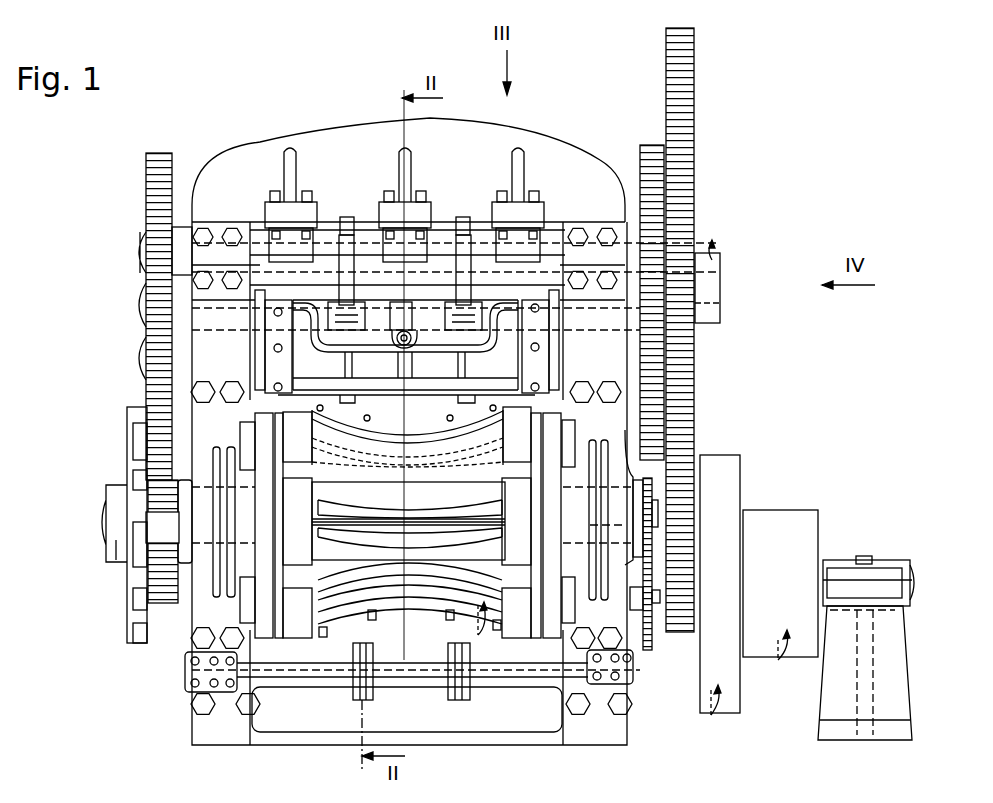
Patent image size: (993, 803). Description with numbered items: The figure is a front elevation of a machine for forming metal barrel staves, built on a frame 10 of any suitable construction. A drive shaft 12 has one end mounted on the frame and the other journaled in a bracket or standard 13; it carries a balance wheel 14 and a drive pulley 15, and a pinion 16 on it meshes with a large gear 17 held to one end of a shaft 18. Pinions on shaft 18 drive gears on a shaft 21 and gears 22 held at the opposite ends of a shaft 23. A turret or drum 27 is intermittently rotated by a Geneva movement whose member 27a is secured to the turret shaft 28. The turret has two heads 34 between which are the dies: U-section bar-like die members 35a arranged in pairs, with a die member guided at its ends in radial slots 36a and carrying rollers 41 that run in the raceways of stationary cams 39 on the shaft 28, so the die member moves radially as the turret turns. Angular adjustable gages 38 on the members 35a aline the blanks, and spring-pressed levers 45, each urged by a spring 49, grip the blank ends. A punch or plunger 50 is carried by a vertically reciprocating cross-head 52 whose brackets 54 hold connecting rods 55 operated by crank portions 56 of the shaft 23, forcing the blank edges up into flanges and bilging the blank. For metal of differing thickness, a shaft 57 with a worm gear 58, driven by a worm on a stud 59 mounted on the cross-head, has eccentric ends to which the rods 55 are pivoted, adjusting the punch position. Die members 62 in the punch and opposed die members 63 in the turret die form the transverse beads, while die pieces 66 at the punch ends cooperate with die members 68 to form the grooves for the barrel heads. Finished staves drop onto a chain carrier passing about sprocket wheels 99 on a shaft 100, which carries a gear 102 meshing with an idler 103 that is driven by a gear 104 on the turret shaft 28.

The frame 10 is at (256, 160).
The drive shaft 12 is at (913, 578).
The bracket or standard 13 is at (894, 664).
The balance wheel 14 is at (720, 462).
The drive pulley 15 is at (777, 518).
The pinion 16 is at (688, 640).
The large gear 17 is at (695, 99).
The shaft 18 is at (728, 290).
The shaft 21 is at (137, 298).
The gears 22 is at (147, 180).
The shaft 23 is at (137, 258).
The turret or drum 27 is at (410, 613).
The Geneva movement member 27a is at (133, 607).
The turret shaft 28 is at (103, 522).
The turret heads 34 is at (522, 617).
The die members 35a is at (428, 483).
The radial slots 36a is at (510, 573).
The angular adjustable gages 38 is at (476, 403).
The stationary cams 39 is at (268, 598).
The rollers 41 is at (250, 405).
The levers 45 is at (312, 460).
The spring 49 is at (350, 460).
The punch or plunger 50 is at (417, 400).
The cross-head 52 is at (318, 358).
The brackets 54 is at (358, 346).
The connecting rods 55 is at (350, 308).
The crank portions 56 is at (345, 240).
The shaft 57 is at (408, 305).
The worm gear 58 is at (412, 308).
The stud 59 is at (403, 350).
The die members 62 is at (447, 413).
The die members 63 is at (372, 622).
The die pieces 66 is at (530, 425).
The die members 68 is at (323, 637).
The sprocket wheels 99 is at (450, 680).
The shaft 100 is at (492, 668).
The gear 102 is at (643, 700).
The idler 103 is at (652, 618).
The gear 104 is at (632, 470).